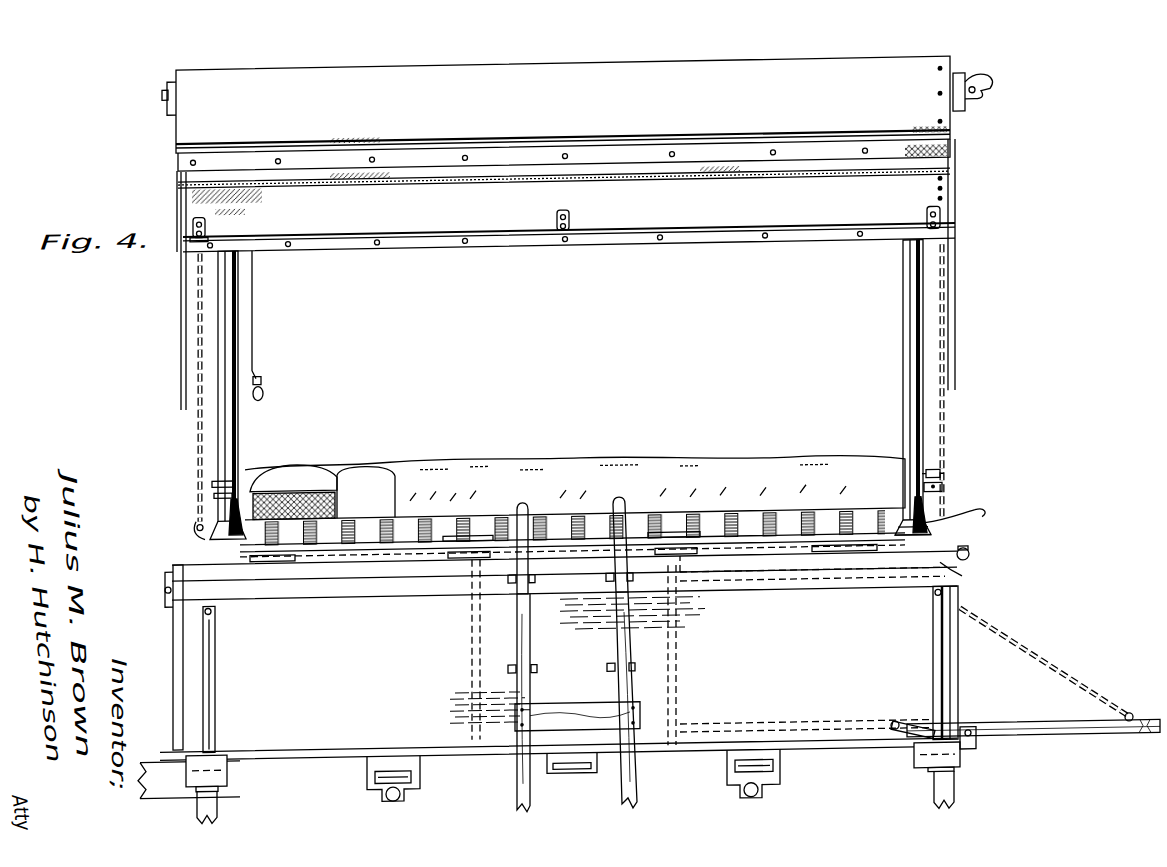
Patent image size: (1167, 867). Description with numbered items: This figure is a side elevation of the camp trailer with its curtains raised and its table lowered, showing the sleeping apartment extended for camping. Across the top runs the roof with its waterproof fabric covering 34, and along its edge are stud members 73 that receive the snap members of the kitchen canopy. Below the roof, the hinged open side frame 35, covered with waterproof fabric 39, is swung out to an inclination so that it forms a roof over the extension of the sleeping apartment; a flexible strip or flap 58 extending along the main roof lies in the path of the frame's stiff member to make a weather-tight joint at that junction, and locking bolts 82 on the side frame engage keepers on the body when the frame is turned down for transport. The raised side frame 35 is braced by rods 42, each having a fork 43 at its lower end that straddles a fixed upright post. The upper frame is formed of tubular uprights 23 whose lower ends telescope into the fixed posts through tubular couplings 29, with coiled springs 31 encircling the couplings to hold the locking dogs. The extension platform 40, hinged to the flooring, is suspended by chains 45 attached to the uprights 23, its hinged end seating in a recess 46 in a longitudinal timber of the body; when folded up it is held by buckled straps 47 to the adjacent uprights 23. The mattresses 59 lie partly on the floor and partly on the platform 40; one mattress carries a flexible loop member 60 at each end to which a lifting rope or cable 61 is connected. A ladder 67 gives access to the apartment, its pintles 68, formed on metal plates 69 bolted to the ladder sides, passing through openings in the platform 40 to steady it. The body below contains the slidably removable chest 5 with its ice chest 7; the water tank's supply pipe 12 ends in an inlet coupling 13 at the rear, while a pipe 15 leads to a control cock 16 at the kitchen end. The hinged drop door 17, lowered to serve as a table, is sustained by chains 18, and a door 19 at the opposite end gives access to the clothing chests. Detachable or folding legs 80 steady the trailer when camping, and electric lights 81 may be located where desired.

The chest 5 is at (715, 105).
The ice chest 7 is at (350, 414).
The water supply pipe 12 is at (785, 586).
The inlet coupling 13 is at (972, 568).
The pipe 15 is at (915, 734).
The control cock 16 is at (976, 762).
The hinged drop door 17 is at (1035, 754).
The chains 18 is at (1045, 676).
The door 19 is at (175, 637).
The uprights 23 is at (218, 338).
The tubular couplings 29 is at (938, 498).
The coiled springs 31 is at (943, 508).
The covering 34 is at (556, 113).
The open frame 35 is at (720, 252).
The fabric 39 is at (566, 274).
The leaves or platforms 40 is at (828, 572).
The rods 42 is at (240, 301).
The fork 43 is at (962, 590).
The chains 45 is at (947, 382).
The recess 46 is at (700, 560).
The buckled-straps 47 is at (988, 528).
The strip or flap 58 is at (690, 194).
The mattresses 59 is at (744, 480).
The member 60 is at (900, 528).
The rope or cable 61 is at (905, 446).
The ladder 67 is at (628, 798).
The pintles 68 is at (530, 518).
The metal plates 69 is at (618, 647).
The stud members 73 is at (940, 65).
The legs 80 is at (217, 814).
The electric lights 81 is at (981, 112).
The locking bolts 82 is at (195, 238).